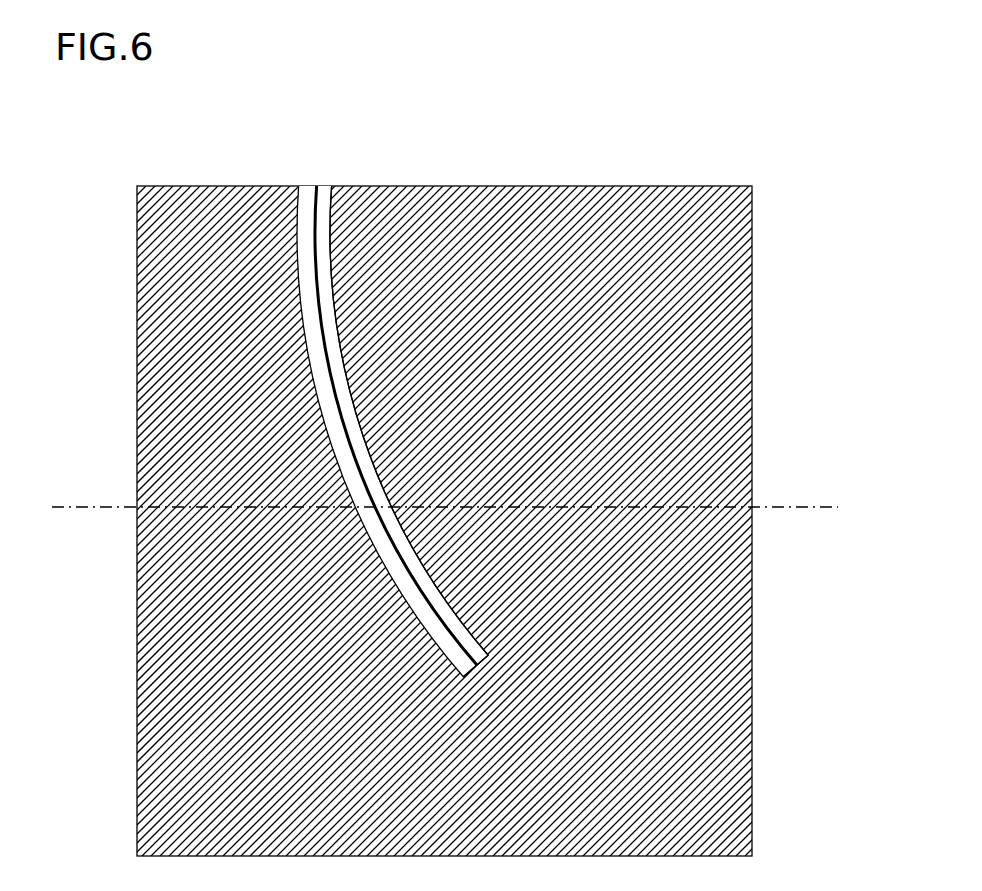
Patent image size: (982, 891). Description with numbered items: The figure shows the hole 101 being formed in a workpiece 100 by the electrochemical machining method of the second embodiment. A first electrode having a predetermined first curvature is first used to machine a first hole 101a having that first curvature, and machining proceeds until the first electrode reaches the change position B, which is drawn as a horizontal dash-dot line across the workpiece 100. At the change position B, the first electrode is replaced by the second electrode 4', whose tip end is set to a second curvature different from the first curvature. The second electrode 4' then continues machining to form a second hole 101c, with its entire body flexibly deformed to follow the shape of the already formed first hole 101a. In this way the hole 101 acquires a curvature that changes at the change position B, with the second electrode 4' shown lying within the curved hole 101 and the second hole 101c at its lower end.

The workpiece 100 is at (482, 228).
The hole 101 is at (331, 231).
The second electrode 4' is at (393, 375).
The first hole 101a is at (330, 342).
The second hole 101c is at (470, 670).
The change position B is at (787, 507).